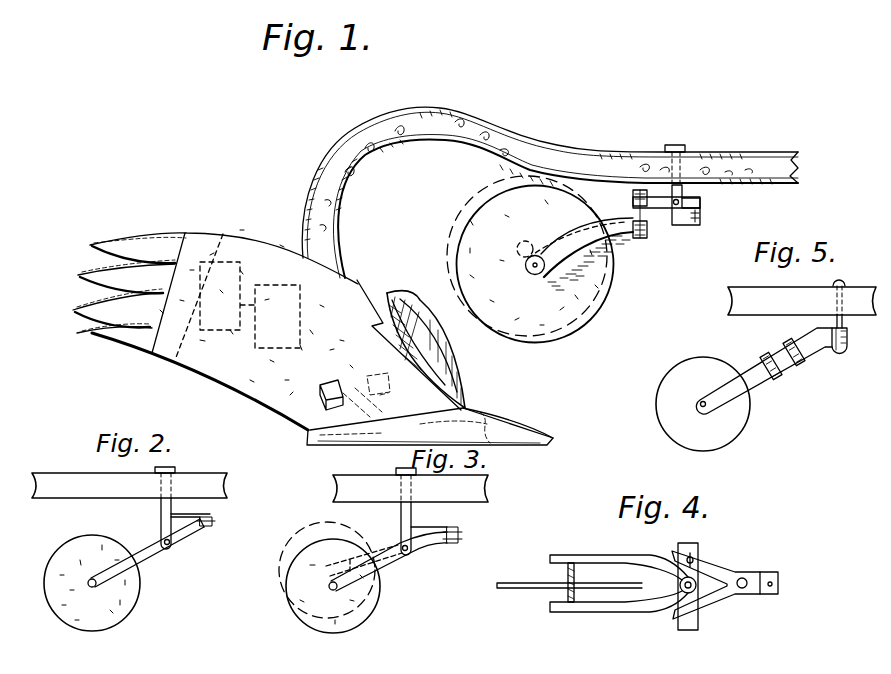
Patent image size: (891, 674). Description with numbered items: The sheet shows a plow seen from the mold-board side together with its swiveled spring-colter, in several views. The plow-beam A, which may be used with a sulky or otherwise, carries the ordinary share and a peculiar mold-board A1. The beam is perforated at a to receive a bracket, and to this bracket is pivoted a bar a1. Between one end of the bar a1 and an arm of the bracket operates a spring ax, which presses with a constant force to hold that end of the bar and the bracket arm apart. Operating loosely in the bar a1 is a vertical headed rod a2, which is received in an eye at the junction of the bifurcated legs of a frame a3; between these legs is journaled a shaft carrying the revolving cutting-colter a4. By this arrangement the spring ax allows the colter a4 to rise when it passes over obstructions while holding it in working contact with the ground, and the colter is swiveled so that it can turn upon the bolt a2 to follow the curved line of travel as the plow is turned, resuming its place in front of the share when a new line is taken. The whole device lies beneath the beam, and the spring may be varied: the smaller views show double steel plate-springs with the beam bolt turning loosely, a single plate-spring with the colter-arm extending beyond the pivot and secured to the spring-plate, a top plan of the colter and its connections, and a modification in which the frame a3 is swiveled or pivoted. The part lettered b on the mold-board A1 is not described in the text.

In FIG. 1, the plow-beam A is at (550, 192).
In FIG. 5, the plow-beam A is at (802, 301).
In FIG. 1, the perforation a is at (678, 162).
In FIG. 1, the bar a1 is at (715, 217).
In FIG. 5, the bar a1 is at (807, 362).
In FIG. 1, the vertical headed rod a2 is at (633, 207).
In FIG. 4, the vertical headed rod a2 is at (677, 608).
In FIG. 5, the vertical headed rod a2 is at (778, 375).
In FIG. 1, the frame a3 is at (616, 233).
In FIG. 2, the frame a3 is at (142, 556).
In FIG. 3, the frame a3 is at (385, 560).
In FIG. 4, the frame a3 is at (619, 574).
In FIG. 5, the frame a3 is at (750, 378).
In FIG. 1, the colter a4 is at (530, 259).
In FIG. 2, the colter a4 is at (92, 583).
In FIG. 3, the colter a4 is at (329, 577).
In FIG. 4, the colter a4 is at (581, 585).
In FIG. 5, the colter a4 is at (703, 404).
In FIG. 1, the mold-board A1 is at (313, 337).
In FIG. 2, the spring ax is at (190, 515).
In FIG. 3, the spring ax is at (440, 528).
In FIG. 1, the share / landside point b is at (420, 349).